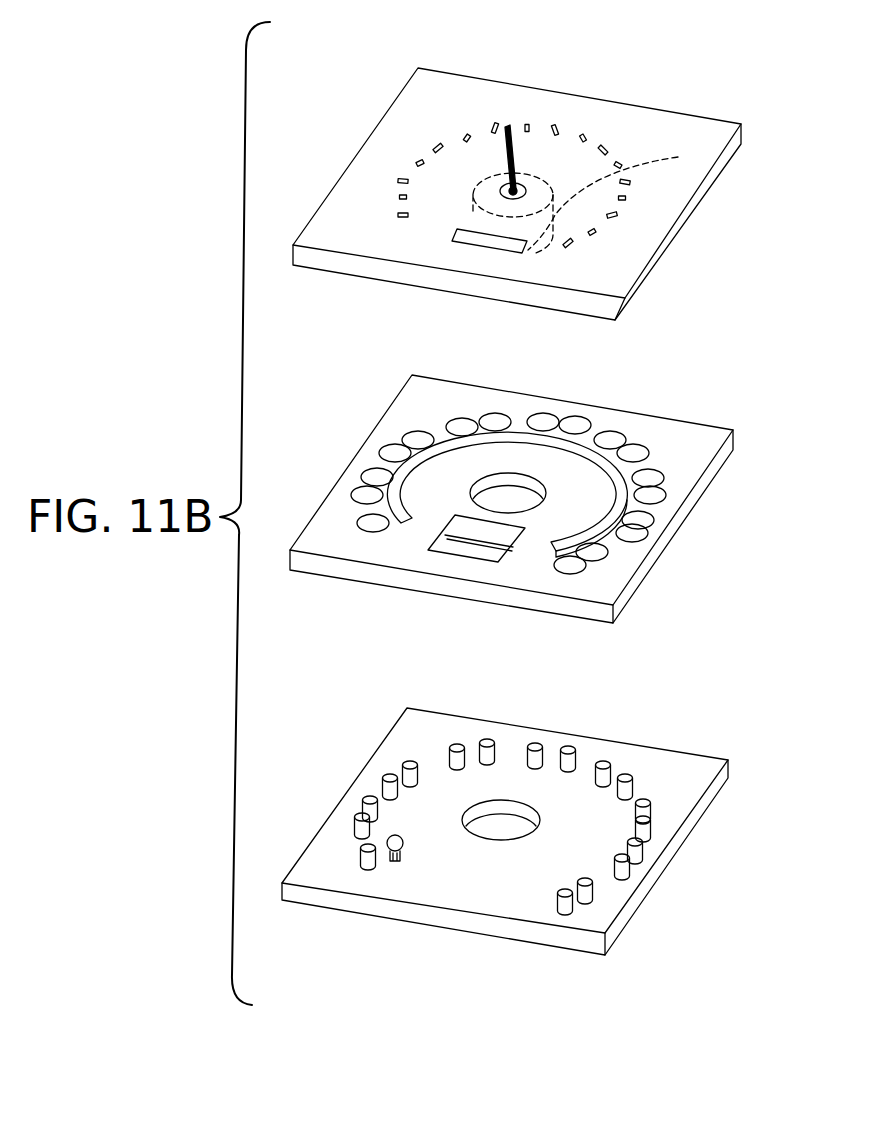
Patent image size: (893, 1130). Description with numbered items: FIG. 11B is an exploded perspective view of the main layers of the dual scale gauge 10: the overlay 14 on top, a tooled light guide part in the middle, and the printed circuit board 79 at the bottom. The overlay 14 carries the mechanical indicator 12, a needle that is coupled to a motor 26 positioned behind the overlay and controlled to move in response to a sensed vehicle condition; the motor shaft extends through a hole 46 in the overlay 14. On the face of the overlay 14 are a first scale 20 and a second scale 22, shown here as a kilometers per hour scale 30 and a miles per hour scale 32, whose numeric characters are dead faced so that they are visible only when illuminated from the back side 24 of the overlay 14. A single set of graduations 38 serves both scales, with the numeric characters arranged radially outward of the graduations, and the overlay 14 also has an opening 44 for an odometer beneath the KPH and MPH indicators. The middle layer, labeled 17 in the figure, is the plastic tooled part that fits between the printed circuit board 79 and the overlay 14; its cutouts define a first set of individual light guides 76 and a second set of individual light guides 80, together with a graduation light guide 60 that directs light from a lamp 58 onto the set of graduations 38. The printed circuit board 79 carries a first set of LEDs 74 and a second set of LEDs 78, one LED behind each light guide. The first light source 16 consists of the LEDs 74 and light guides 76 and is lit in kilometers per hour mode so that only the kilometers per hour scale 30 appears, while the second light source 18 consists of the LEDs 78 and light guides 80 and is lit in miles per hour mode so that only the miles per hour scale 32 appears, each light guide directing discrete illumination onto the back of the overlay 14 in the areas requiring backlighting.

The dual scale gauge 10 is at (590, 27).
The mechanical indicator 12 is at (510, 128).
The overlay 14 is at (453, 88).
The first light source 16 is at (361, 488).
The second light source 18 is at (374, 472).
The first scale 20 is at (363, 184).
The second scale 22 is at (376, 159).
The back side of the overlay 24 is at (590, 320).
The motor 26 is at (617, 198).
The kilometers per hour scale 30 is at (569, 261).
The miles per hour scale 32 is at (594, 242).
The set of graduations 38 is at (404, 228).
The opening for an odometer 44 is at (454, 230).
The hole 46 is at (528, 177).
The lamp 58 is at (404, 849).
The graduation light guide 60 is at (392, 503).
The light guide plate 17 is at (727, 414).
The first set of LEDs 74 is at (487, 743).
The first set of individual light guides 76 is at (420, 438).
The second set of LEDs 78 is at (457, 748).
The printed circuit board 79 is at (728, 736).
The second set of individual light guides 80 is at (458, 425).